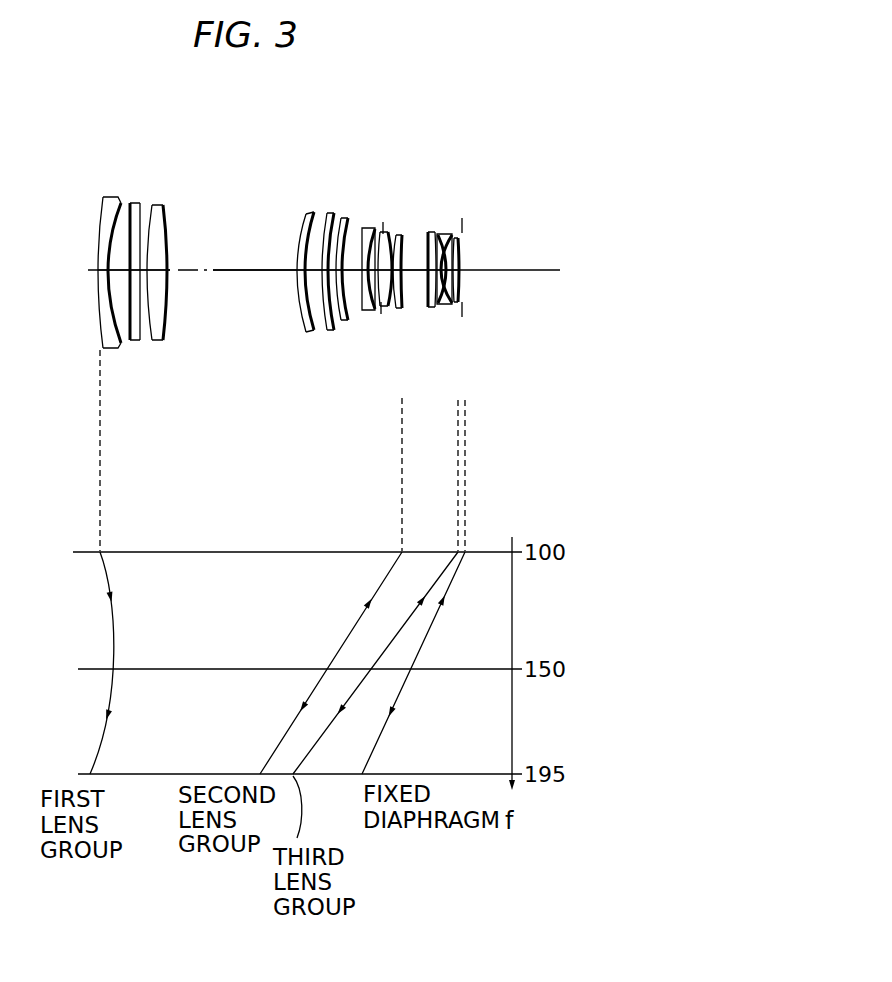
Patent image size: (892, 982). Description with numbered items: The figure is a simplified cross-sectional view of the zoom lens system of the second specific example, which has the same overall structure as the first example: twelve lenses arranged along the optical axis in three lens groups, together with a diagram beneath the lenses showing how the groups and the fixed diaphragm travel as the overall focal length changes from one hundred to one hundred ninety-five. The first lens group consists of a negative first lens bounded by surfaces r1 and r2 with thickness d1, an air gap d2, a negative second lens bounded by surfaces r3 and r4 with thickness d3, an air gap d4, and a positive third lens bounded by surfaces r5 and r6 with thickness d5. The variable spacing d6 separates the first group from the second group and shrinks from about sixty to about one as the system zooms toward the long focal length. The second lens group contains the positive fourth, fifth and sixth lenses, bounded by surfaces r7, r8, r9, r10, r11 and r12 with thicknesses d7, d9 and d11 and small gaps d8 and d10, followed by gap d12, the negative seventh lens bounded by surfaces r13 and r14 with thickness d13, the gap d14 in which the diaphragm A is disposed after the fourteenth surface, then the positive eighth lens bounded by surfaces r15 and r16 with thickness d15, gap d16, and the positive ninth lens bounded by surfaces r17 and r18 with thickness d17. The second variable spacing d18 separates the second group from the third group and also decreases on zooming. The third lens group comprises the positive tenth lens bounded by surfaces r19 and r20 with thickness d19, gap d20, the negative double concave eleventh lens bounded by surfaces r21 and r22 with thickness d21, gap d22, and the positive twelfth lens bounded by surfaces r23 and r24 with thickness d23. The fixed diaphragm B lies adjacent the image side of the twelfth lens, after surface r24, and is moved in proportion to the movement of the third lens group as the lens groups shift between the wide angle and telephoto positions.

The radius of curvature of first surface of first lens r1 is at (103, 200).
The radius of curvature of second surface of first lens r2 is at (119, 201).
The radius of curvature of first surface of second lens r3 is at (130, 204).
The radius of curvature of second surface of second lens r4 is at (140, 204).
The radius of curvature of first surface of third lens r5 is at (151, 206).
The radius of curvature of second surface of third lens r6 is at (164, 206).
The radius of curvature of first surface of fourth lens r7 is at (306, 215).
The radius of curvature of second surface of fourth lens r8 is at (314, 213).
The radius of curvature of first surface of fifth lens r9 is at (327, 214).
The radius of curvature of second surface of fifth lens r10 is at (334, 213).
The radius of curvature of first surface of sixth lens r11 is at (341, 219).
The radius of curvature of second surface of sixth lens r12 is at (348, 218).
The radius of curvature of first surface of seventh lens r13 is at (362, 228).
The radius of curvature of second surface of seventh lens r14 is at (375, 229).
The radius of curvature of first surface of eighth lens r15 is at (379, 232).
The radius of curvature of second surface of eighth lens r16 is at (388, 233).
The radius of curvature of first surface of ninth lens r17 is at (395, 235).
The radius of curvature of second surface of ninth lens r18 is at (401, 236).
The radius of curvature of first surface of tenth lens r19 is at (428, 232).
The radius of curvature of second surface of tenth lens r20 is at (435, 232).
The radius of curvature of first surface of eleventh lens r21 is at (438, 234).
The radius of curvature of second surface of eleventh lens r22 is at (451, 234).
The radius of curvature of first surface of twelfth lens r23 is at (453, 240).
The radius of curvature of second surface of twelfth lens r24 is at (458, 242).
The thickness of first lens d1 is at (103, 274).
The spacing between first and second lenses d2 is at (119, 277).
The thickness of second lens d3 is at (135, 276).
The spacing between second and third lenses d4 is at (144, 276).
The thickness of third lens d5 is at (157, 276).
The spacing between first and second lens groups d6 is at (220, 276).
The thickness of fourth lens d7 is at (301, 274).
The spacing between fourth and fifth lenses d8 is at (313, 276).
The thickness of fifth lens d9 is at (325, 277).
The spacing between fifth and sixth lenses d10 is at (332, 277).
The thickness of sixth lens d11 is at (339, 277).
The spacing between sixth and seventh lenses d12 is at (352, 277).
The thickness of seventh lens d13 is at (365, 277).
The spacing between seventh and eighth lenses d14 is at (373, 277).
The thickness of eighth lens d15 is at (385, 277).
The spacing between eighth and ninth lenses d16 is at (393, 277).
The thickness of ninth lens d17 is at (397, 277).
The spacing between second and third lens groups d18 is at (414, 277).
The thickness of tenth lens d19 is at (431, 277).
The spacing between tenth and eleventh lenses d20 is at (436, 277).
The thickness of eleventh lens d21 is at (444, 277).
The spacing between eleventh and twelfth lenses d22 is at (452, 277).
The thickness of twelfth lens d23 is at (456, 276).
The aperture A is at (383, 222).
The fixed diaphragm B is at (463, 222).